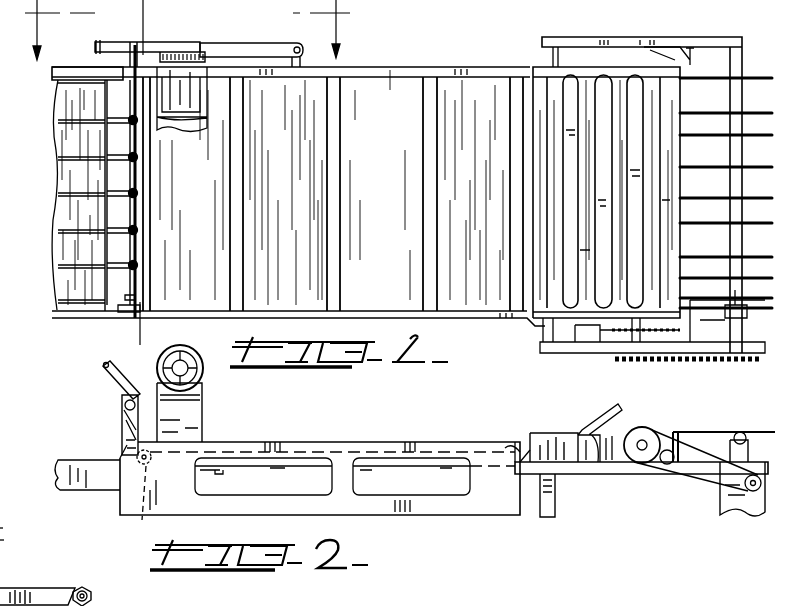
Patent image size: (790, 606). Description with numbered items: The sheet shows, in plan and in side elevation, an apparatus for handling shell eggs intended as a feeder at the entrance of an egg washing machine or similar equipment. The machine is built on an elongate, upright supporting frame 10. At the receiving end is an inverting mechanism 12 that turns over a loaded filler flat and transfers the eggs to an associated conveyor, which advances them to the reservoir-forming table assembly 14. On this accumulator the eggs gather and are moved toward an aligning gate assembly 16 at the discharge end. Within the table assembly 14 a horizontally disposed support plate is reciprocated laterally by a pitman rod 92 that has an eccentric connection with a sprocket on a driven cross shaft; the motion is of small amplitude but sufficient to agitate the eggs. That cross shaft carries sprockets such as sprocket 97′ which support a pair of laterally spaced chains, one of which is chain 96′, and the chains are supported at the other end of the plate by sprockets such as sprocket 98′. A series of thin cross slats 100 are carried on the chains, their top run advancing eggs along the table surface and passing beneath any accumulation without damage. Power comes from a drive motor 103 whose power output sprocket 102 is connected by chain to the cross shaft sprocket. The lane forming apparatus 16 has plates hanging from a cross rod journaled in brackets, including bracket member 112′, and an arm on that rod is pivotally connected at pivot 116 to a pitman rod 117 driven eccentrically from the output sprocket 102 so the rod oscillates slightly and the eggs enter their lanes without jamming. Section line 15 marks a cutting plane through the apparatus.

In FIG. 2, the supporting frame 10 is at (553, 521).
In FIG. 1, the inverting mechanism 12 is at (749, 70).
In FIG. 2, the inverting mechanism 12 is at (690, 424).
In FIG. 1, the reservoir-forming table assembly 14 is at (356, 64).
In FIG. 2, the reservoir-forming table assembly 14 is at (95, 448).
In FIG. 1, the section line 15 is at (110, 18).
In FIG. 1, the aligning gate assembly 16 is at (70, 343).
In FIG. 2, the aligning gate assembly 16 is at (108, 420).
In FIG. 1, the pitman rod 92 is at (240, 50).
In FIG. 2, the chain 96′ is at (362, 450).
In FIG. 2, the sprocket 97′ is at (140, 494).
In FIG. 2, the sprocket 98′ is at (510, 472).
In FIG. 1, the cross slats 100 is at (330, 150).
In FIG. 2, the power output sprocket 102 is at (10, 517).
In FIG. 1, the drive motor 103 is at (199, 95).
In FIG. 2, the drive motor 103 is at (0, 553).
In FIG. 1, the bracket member 112′ is at (130, 62).
In FIG. 2, the bracket member 112′ is at (122, 435).
In FIG. 2, the pivotal connection 116 is at (90, 588).
In FIG. 2, the pitman rod 117 is at (42, 597).